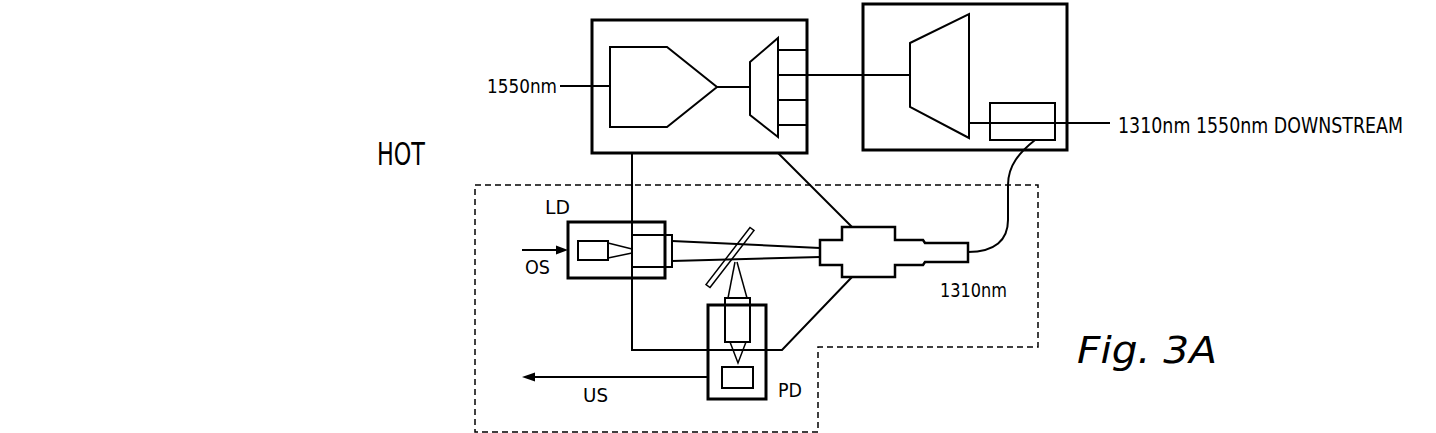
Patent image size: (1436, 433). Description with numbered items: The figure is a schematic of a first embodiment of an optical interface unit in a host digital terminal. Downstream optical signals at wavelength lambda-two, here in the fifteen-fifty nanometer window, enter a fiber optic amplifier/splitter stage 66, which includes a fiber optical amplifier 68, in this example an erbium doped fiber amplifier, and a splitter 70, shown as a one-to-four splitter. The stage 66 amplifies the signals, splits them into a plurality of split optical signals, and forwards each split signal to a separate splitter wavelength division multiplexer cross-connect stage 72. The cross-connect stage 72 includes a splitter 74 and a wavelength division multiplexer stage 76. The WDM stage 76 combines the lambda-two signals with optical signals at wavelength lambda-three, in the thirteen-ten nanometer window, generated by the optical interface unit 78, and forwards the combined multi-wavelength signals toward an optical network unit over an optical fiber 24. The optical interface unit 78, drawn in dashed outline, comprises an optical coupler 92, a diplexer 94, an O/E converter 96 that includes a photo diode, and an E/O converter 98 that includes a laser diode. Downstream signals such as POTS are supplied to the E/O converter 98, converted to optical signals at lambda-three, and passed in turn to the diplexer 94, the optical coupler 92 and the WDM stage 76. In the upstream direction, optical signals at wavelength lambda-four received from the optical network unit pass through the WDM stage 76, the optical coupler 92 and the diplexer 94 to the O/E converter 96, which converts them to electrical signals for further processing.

The optical fiber 24 is at (1097, 123).
The fiber optic amplifier/splitter stage 66 is at (592, 55).
The fiber optical amplifier 68 is at (683, 59).
The splitter 70 is at (750, 101).
The splitter wavelength division multiplexer cross-connect 72 is at (1067, 58).
The splitter 74 is at (969, 55).
The wavelength division multiplexer stage 76 is at (1030, 103).
The optical interface unit 78 is at (1038, 240).
The optical coupler 92 is at (875, 277).
The diplexer 94 is at (704, 277).
The O/E converter 96 is at (725, 399).
The E/O converter 98 is at (596, 279).